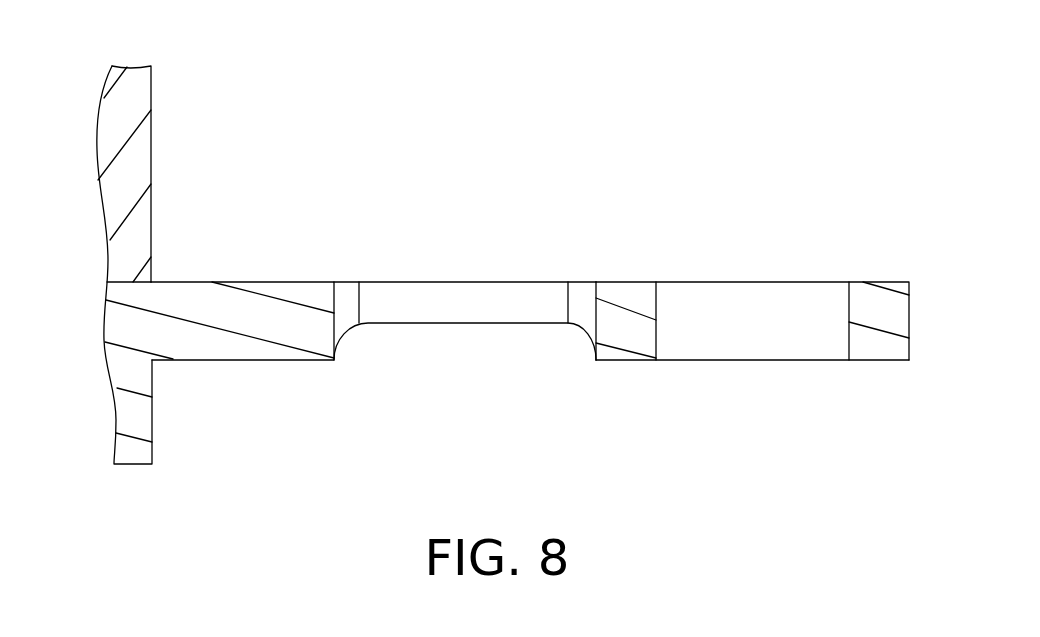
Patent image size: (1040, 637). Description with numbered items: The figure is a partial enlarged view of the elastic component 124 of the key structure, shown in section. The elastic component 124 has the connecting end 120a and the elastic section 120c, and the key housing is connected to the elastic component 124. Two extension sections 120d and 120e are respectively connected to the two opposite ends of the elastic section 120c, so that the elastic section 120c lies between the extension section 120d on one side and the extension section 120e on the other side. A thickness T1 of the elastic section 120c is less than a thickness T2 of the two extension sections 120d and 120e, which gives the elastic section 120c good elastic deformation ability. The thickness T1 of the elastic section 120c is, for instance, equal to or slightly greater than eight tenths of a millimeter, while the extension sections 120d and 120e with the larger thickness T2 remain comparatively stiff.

The connecting end 120a is at (878, 361).
The elastic section 120c is at (334, 229).
The extension section 120d is at (152, 229).
The extension section 120e is at (596, 229).
The elastic component 124 is at (228, 345).
The thickness of the elastic section T1 is at (475, 247).
The thickness of the extension sections T2 is at (748, 282).